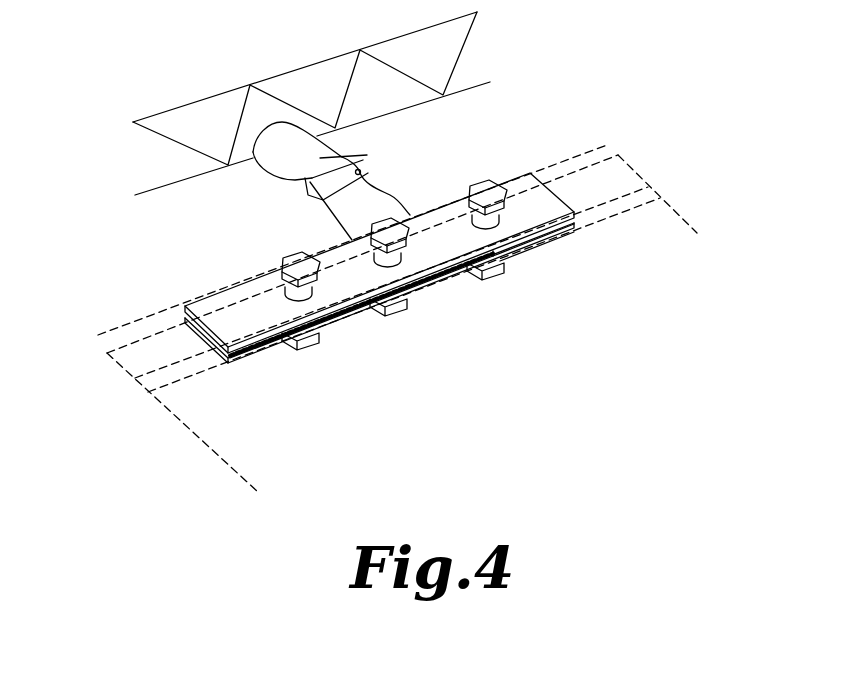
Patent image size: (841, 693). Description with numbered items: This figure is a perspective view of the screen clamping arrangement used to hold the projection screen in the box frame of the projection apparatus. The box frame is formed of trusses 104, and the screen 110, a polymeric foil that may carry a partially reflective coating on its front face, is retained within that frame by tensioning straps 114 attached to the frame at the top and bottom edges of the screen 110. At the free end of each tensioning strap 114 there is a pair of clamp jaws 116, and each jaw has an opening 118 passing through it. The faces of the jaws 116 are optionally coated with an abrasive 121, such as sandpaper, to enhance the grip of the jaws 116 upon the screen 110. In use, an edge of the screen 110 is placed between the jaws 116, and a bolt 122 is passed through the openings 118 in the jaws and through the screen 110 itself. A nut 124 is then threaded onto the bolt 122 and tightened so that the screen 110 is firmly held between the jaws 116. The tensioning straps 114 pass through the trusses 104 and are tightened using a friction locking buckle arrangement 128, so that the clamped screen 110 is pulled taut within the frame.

The trusses 104 is at (163, 108).
The screen 110 is at (282, 461).
The tensioning straps 114 is at (343, 215).
The clamp jaws 116 is at (515, 202).
The opening 118 is at (505, 256).
The abrasive 121 is at (340, 312).
The bolt 122 is at (568, 227).
The nut 124 is at (490, 284).
The friction locking buckle arrangement 128 is at (352, 145).